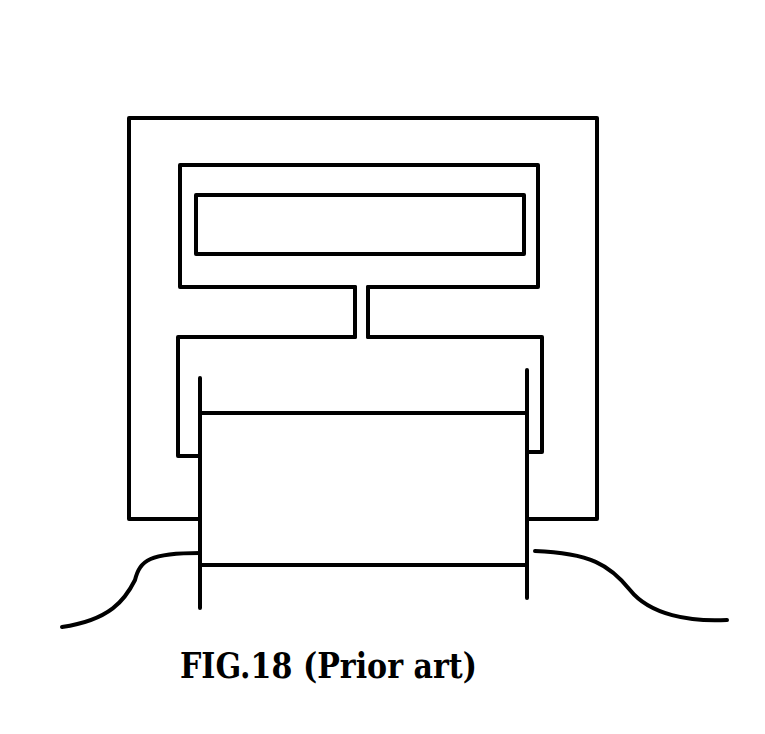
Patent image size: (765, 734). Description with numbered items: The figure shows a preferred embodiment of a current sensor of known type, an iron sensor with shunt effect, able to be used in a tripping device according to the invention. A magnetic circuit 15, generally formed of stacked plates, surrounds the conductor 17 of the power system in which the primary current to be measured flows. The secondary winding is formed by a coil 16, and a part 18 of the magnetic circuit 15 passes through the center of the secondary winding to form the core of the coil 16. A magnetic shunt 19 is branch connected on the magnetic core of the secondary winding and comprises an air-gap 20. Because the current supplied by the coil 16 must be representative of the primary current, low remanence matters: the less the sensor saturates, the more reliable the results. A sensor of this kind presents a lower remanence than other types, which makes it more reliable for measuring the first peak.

The magnetic circuit 15 is at (217, 129).
The coil 16 is at (220, 537).
The conductor 17 is at (517, 228).
The part of the magnetic circuit 18 is at (570, 486).
The magnetic shunt 19 is at (517, 305).
The air-gap 20 is at (357, 325).